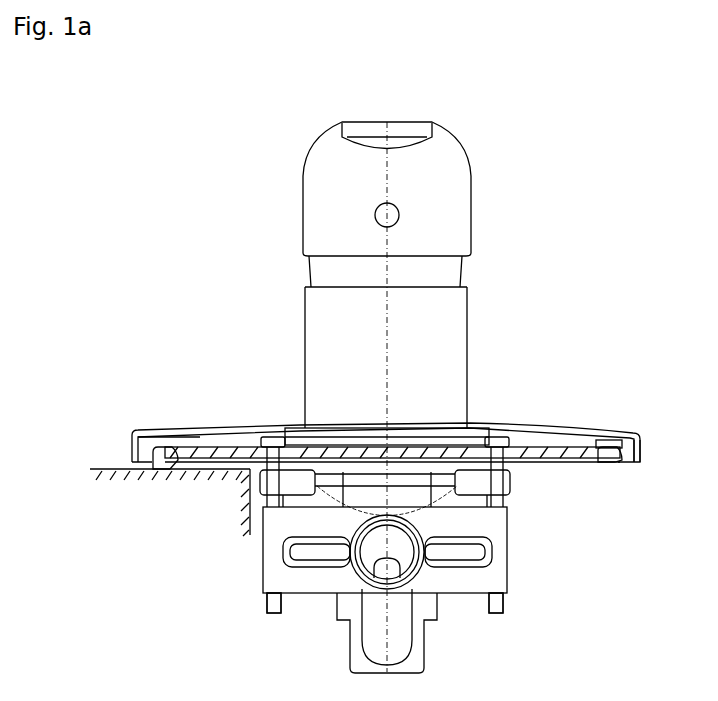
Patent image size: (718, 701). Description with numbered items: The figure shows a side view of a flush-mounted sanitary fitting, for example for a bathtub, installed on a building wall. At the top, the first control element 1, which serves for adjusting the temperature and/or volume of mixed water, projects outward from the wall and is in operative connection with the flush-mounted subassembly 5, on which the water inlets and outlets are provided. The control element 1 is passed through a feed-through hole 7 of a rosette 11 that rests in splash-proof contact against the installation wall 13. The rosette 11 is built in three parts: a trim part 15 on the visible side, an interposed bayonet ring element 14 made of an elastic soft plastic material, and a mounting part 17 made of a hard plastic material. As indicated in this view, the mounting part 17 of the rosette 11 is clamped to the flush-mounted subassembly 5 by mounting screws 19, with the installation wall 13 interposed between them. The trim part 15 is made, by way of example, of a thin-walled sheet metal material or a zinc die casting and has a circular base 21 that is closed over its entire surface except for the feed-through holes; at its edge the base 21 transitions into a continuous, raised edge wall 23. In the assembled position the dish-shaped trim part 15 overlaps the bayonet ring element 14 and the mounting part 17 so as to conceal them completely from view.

The first control element 1 is at (355, 199).
The flush-mounted subassembly 5 is at (541, 475).
The feed-through hole 7 is at (471, 425).
The rosette 11 is at (551, 416).
The installation wall 13 is at (112, 460).
The bayonet ring element 14 is at (587, 463).
The trim part 15 is at (603, 320).
The mounting part 17 is at (597, 467).
The mounting screws 19 is at (268, 615).
The base 21 is at (607, 432).
The edge wall 23 is at (642, 443).